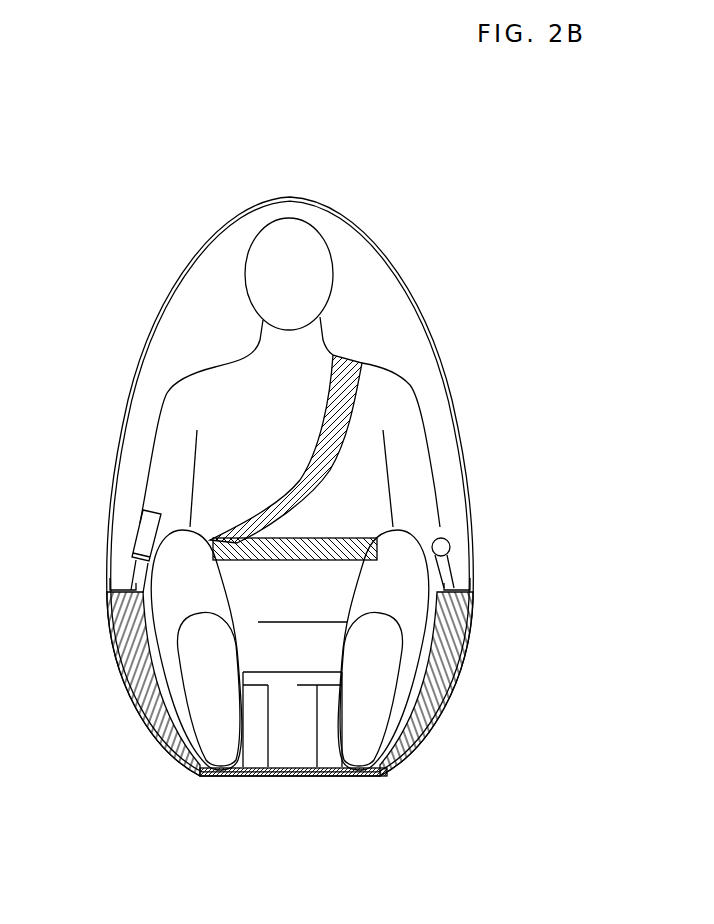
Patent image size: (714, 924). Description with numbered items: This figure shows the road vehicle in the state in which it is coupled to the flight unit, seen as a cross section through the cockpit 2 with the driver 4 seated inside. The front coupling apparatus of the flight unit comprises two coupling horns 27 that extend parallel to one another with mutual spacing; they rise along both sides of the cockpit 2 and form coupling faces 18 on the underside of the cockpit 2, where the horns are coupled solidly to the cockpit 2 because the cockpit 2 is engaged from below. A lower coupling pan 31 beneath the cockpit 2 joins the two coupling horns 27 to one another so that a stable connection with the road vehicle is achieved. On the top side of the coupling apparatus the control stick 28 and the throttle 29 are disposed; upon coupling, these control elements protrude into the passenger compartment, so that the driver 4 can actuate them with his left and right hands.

The cockpit 2 is at (418, 307).
The driver 4 is at (295, 243).
The coupling faces 18 is at (112, 587).
The coupling horns 27 is at (140, 678).
The control stick 28 is at (148, 536).
The throttle 29 is at (442, 538).
The lower coupling pan 31 is at (293, 776).